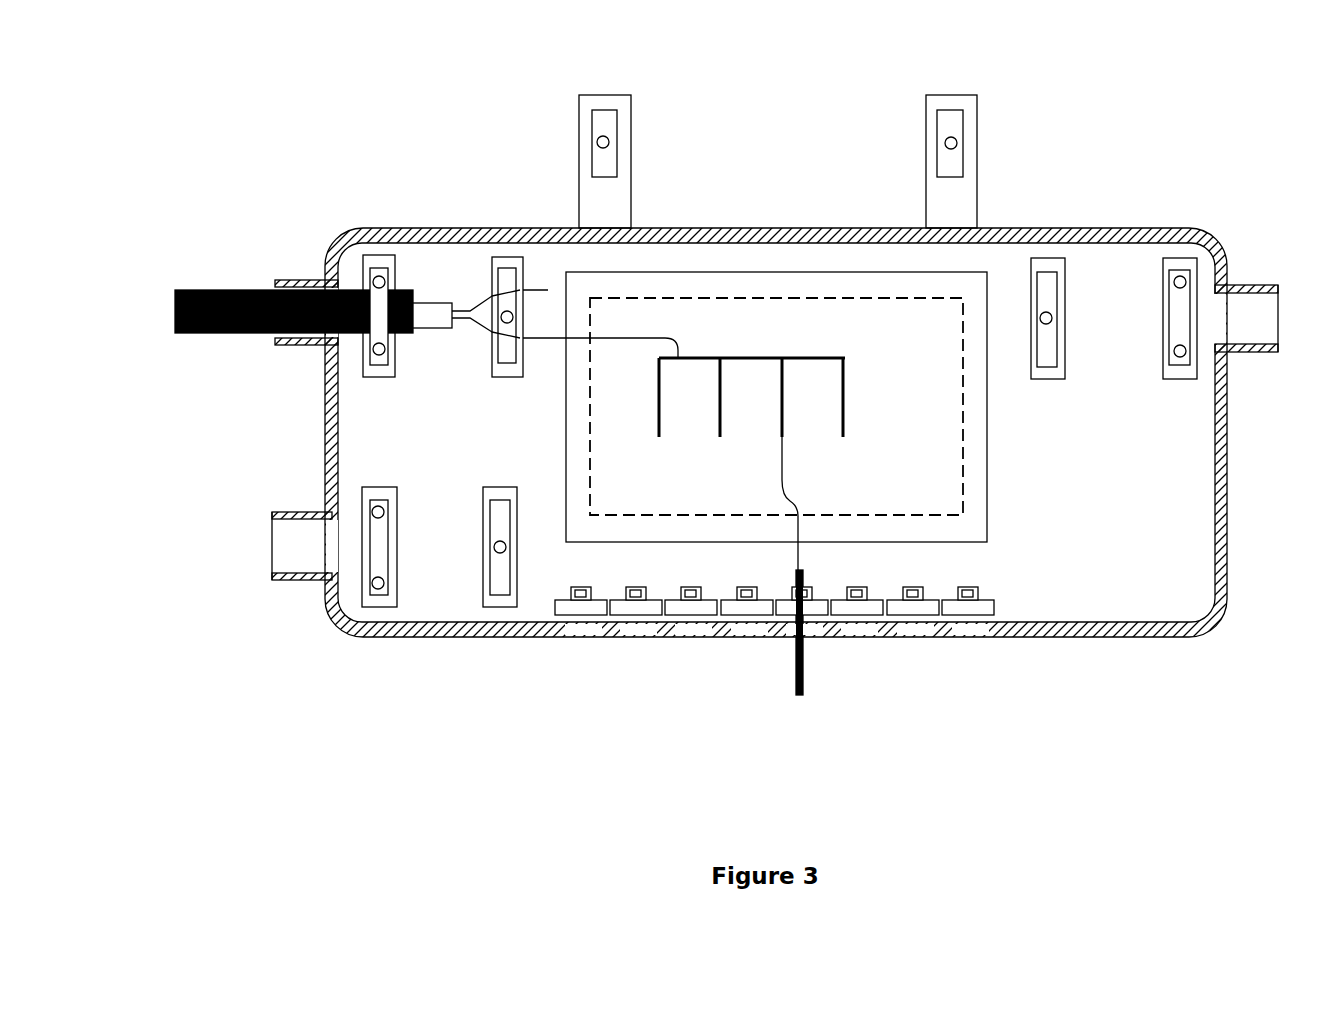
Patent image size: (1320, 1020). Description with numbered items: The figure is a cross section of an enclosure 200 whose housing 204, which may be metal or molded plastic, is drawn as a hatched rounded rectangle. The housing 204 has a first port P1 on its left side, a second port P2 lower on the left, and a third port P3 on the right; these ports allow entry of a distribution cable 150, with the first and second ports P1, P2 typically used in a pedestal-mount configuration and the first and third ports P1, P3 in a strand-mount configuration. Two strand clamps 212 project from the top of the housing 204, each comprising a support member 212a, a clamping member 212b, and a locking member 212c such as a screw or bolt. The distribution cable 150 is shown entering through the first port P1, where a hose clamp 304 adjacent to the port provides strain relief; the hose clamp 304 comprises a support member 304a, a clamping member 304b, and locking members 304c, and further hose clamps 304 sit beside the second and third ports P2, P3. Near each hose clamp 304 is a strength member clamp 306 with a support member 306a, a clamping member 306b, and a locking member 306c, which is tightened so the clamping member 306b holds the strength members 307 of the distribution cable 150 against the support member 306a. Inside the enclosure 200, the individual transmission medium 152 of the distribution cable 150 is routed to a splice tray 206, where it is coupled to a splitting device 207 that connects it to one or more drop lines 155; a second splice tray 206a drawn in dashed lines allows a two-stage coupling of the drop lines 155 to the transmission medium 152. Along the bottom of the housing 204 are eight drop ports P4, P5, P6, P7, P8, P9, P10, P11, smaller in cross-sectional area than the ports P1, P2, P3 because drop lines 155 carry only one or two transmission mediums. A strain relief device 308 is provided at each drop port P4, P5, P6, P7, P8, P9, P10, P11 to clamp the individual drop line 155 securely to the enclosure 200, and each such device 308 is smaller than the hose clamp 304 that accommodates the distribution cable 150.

The enclosure 200 is at (743, 363).
The housing 204 is at (485, 228).
The splice tray 206 is at (730, 291).
The second splice tray 206a is at (964, 441).
The splitting device 207 is at (848, 367).
The strand clamp 212 is at (734, 145).
The support member 212a is at (591, 196).
The clamping member 212b is at (590, 129).
The locking member 212c is at (612, 142).
The hose clamp 304 is at (731, 424).
The support member 304a is at (381, 497).
The clamping member 304b is at (385, 545).
The locking members 304c is at (386, 585).
The strength member clamp 306 is at (754, 464).
The support member 306a is at (503, 495).
The clamping member 306b is at (511, 497).
The locking member 306c is at (508, 547).
The strength members 307 is at (462, 306).
The strain relief device 308 is at (985, 599).
The distribution cable 150 is at (242, 290).
The individual transmission medium 152 is at (455, 326).
The drop lines 155 is at (795, 666).
The first port P1 is at (278, 341).
The second port P2 is at (292, 533).
The third port P3 is at (1240, 342).
The drop port P4 is at (580, 636).
The drop port P5 is at (634, 636).
The drop port P6 is at (688, 636).
The drop port P7 is at (742, 636).
The drop port P8 is at (786, 636).
The drop port P9 is at (852, 636).
The drop port P10 is at (907, 636).
The drop port P11 is at (963, 636).